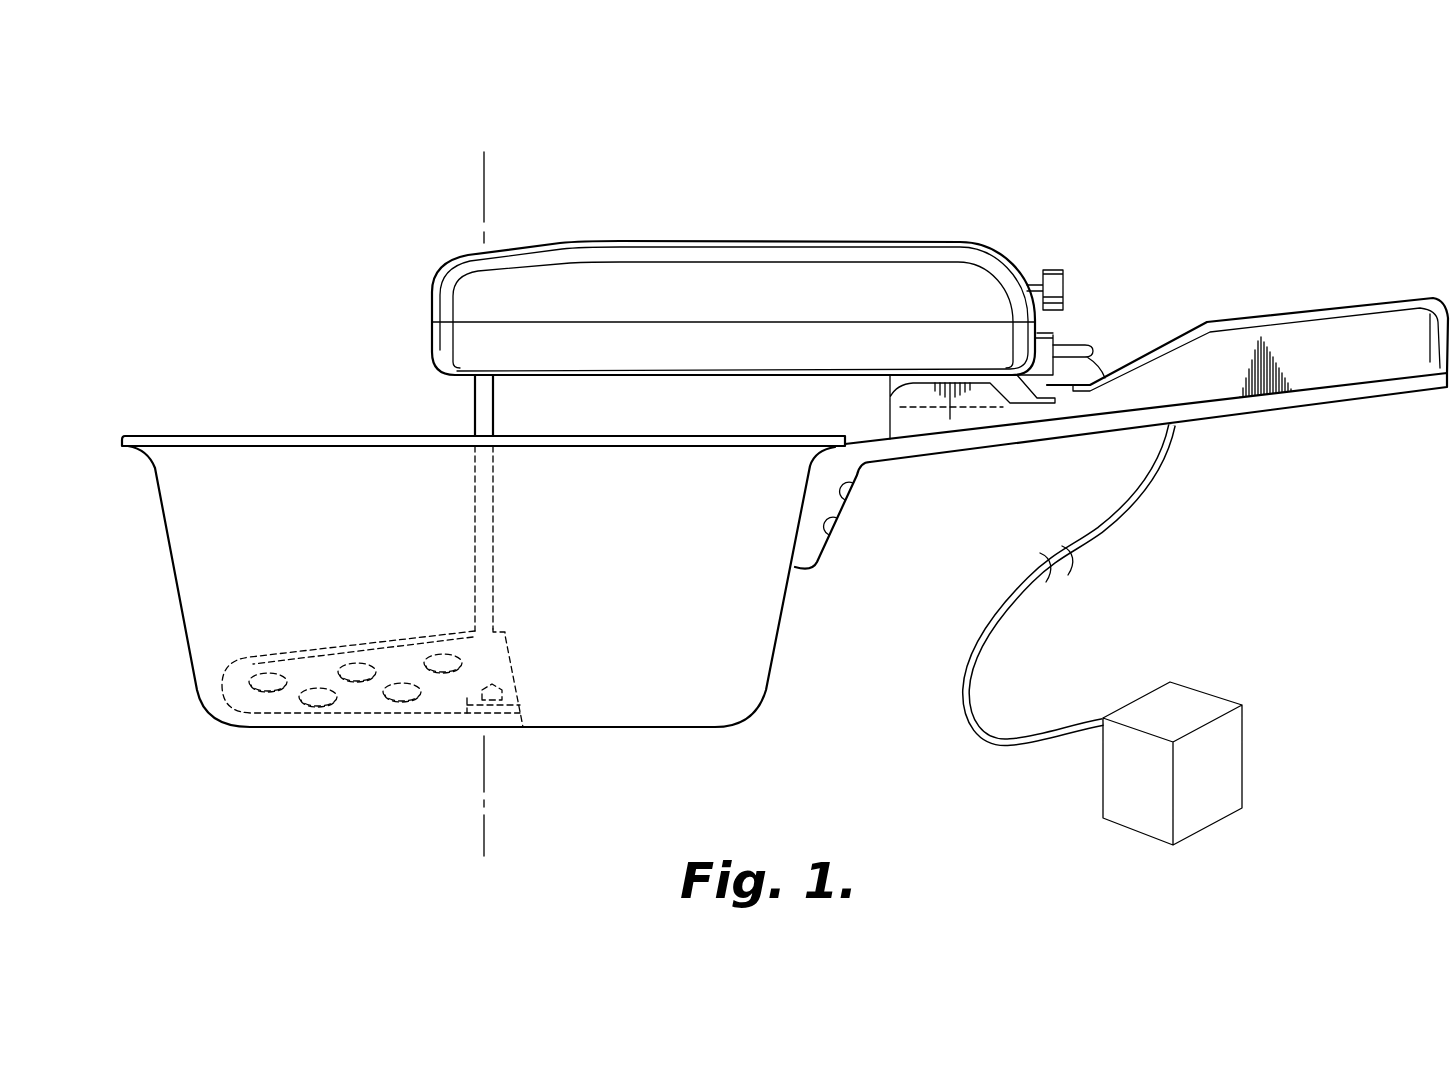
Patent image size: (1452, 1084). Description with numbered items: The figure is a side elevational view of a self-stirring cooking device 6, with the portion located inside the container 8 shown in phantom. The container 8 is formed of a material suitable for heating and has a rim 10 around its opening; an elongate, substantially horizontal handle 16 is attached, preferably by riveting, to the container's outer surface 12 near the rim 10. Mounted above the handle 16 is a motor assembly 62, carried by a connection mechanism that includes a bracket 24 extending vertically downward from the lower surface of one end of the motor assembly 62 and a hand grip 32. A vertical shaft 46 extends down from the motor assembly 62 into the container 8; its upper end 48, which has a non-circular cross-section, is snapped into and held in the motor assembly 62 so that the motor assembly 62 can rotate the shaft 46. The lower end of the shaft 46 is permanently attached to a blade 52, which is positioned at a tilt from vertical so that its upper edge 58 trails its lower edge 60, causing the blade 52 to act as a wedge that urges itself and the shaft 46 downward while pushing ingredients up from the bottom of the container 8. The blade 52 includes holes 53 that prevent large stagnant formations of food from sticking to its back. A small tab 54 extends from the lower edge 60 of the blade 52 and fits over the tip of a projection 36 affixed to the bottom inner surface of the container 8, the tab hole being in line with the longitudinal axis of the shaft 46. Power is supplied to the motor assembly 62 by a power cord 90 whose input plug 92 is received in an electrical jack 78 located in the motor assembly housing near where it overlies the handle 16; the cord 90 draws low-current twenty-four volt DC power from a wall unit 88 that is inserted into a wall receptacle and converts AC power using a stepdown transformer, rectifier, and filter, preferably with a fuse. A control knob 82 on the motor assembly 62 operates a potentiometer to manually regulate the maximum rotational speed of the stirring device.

The self-stirring cooking device 6 is at (348, 188).
The container 8 is at (160, 572).
The rim 10 is at (125, 437).
The outer surface 12 is at (750, 641).
The handle 16 is at (1272, 417).
The bracket 24 is at (890, 390).
The hand grip 32 is at (1298, 320).
The projection 36 is at (518, 714).
The vertical shaft 46 is at (506, 510).
The upper end 48 is at (472, 379).
The blade 52 is at (214, 692).
The holes 53 is at (302, 716).
The tab 54 is at (470, 716).
The upper edge 58 is at (245, 660).
The lower edge 60 is at (390, 716).
The motor assembly 62 is at (746, 238).
The electrical jack 78 is at (1062, 334).
The control knob 82 is at (1052, 270).
The wall unit 88 is at (1245, 770).
The power cord 90 is at (1023, 604).
The input plug 92 is at (1090, 356).